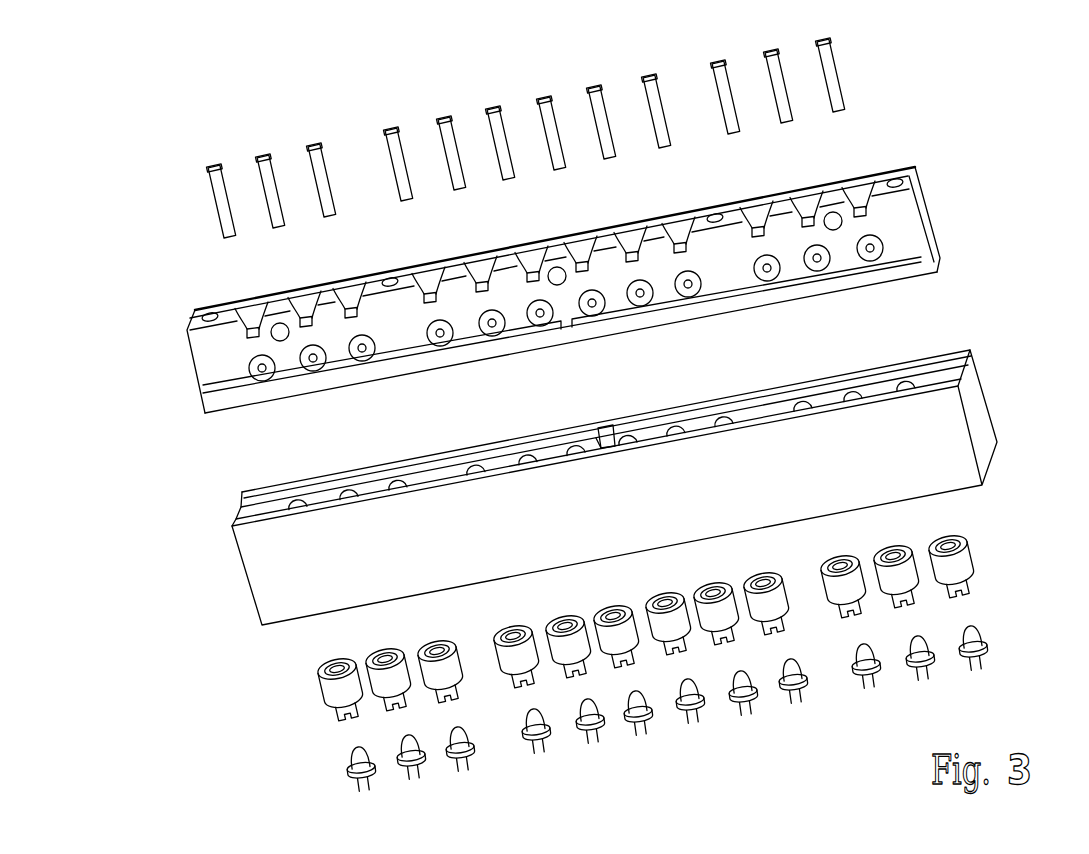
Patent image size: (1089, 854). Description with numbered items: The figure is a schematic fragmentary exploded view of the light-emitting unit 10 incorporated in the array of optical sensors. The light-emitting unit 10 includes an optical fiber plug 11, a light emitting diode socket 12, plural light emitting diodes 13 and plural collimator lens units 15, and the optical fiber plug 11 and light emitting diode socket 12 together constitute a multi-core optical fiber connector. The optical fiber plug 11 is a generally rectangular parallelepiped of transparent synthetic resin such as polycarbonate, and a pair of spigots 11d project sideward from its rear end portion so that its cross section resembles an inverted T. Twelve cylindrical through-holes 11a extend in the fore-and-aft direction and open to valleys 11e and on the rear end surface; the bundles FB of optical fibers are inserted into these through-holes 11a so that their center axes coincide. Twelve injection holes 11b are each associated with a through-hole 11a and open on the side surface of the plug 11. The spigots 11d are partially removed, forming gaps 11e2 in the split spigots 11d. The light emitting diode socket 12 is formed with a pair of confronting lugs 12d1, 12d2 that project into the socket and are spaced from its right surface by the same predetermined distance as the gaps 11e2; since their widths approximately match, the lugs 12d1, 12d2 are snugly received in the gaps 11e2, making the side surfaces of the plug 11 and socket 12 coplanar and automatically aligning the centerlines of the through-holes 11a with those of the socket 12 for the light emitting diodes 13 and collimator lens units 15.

The light-emitting unit 10 is at (613, 405).
The optical fiber plug 11 is at (590, 273).
The cylindrical through-holes 11a is at (262, 314).
The injection holes 11b is at (874, 243).
The spigots 11d is at (940, 238).
The valleys 11e is at (238, 308).
The gaps 11e2 is at (562, 340).
The light emitting diode socket 12 is at (640, 486).
The lug 12d1 is at (607, 426).
The lug 12d2 is at (596, 442).
The light emitting diodes 13 is at (986, 629).
The collimator lens units 15 is at (964, 571).
The bundles of optical fibers FB is at (258, 157).